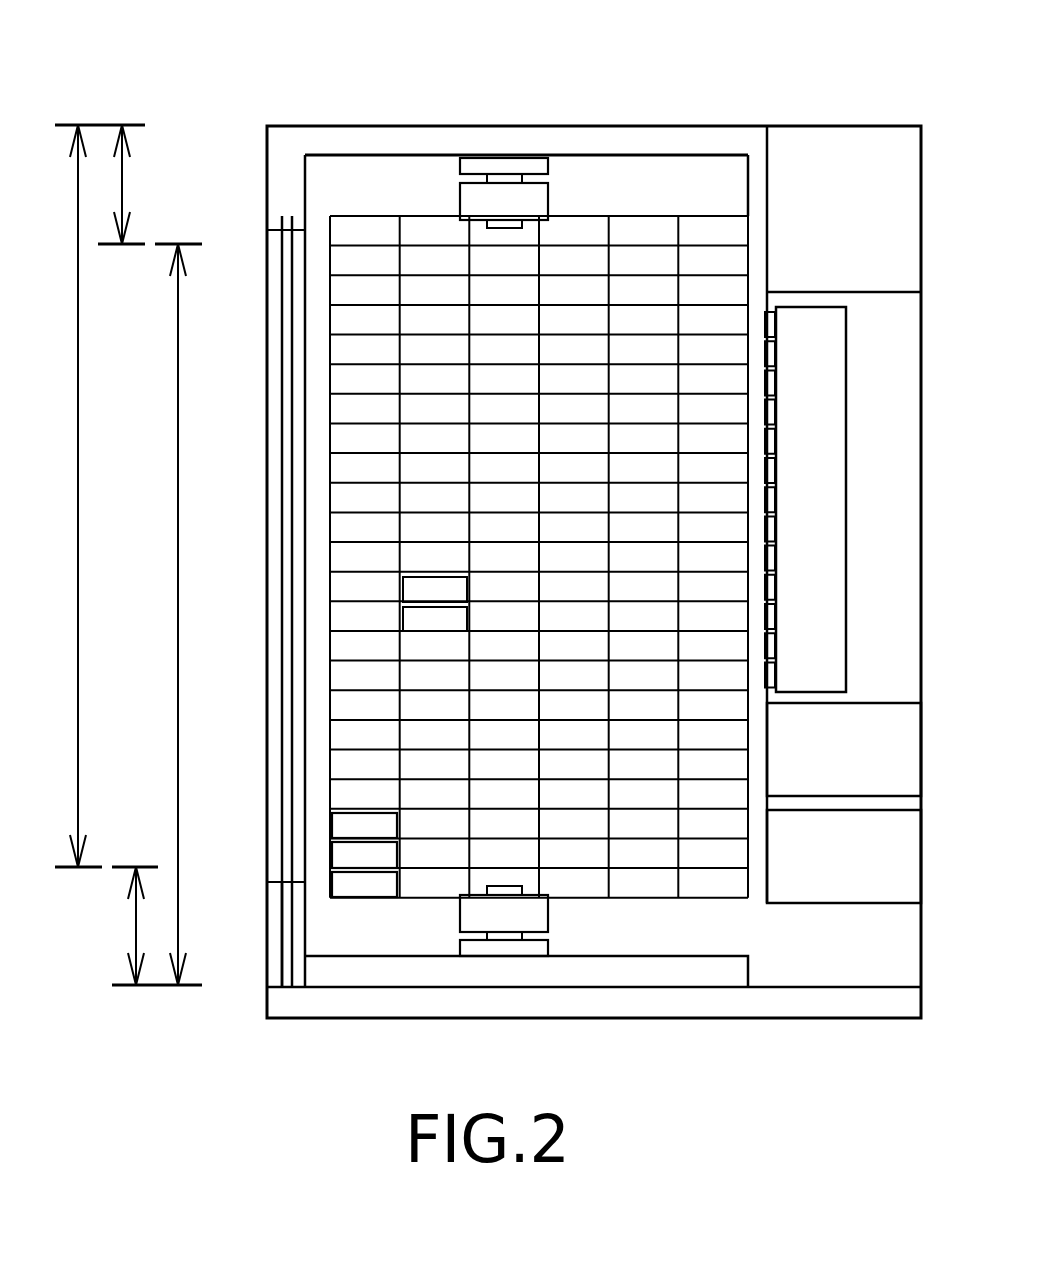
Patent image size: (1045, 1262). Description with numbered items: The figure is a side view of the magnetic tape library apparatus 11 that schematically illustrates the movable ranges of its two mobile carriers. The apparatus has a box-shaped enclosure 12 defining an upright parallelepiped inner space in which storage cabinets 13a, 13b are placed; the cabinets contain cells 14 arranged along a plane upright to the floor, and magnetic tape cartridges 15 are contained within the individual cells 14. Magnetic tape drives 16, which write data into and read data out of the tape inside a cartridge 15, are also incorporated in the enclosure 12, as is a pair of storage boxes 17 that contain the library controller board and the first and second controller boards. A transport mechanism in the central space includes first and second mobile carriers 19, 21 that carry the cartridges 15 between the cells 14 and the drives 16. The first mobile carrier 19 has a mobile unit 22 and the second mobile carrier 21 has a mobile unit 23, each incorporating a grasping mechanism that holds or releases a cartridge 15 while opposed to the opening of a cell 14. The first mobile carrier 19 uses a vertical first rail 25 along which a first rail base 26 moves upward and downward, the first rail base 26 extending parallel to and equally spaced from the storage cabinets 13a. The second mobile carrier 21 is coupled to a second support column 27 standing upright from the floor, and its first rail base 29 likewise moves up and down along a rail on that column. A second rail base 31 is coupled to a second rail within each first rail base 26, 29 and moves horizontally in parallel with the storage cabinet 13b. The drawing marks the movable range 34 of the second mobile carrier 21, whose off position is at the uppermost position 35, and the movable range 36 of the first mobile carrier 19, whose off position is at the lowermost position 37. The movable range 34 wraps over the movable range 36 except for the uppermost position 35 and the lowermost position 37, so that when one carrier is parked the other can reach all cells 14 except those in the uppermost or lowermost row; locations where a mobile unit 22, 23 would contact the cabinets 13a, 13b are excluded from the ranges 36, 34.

The magnetic tape library apparatus 11 is at (281, 101).
The enclosure 12 is at (756, 126).
The storage cabinet 13a is at (676, 216).
The storage cabinet 13b is at (846, 418).
The cell 14 is at (330, 816).
The magnetic tape cartridge 15 is at (765, 312).
The magnetic tape drive 16 is at (860, 703).
The storage box 17 is at (868, 126).
The first mobile carrier 19 is at (461, 991).
The second mobile carrier 21 is at (475, 121).
The mobile unit 22 is at (460, 915).
The mobile unit 23 is at (460, 205).
The first rail 25 is at (282, 935).
The first rail base 26 is at (693, 956).
The second support column 27 is at (266, 365).
The first rail base 29 is at (582, 126).
The second rail base 31 is at (548, 167).
The movable range 34 is at (86, 496).
The uppermost position 35 is at (138, 184).
The movable range 36 is at (157, 614).
The lowermost position 37 is at (121, 926).